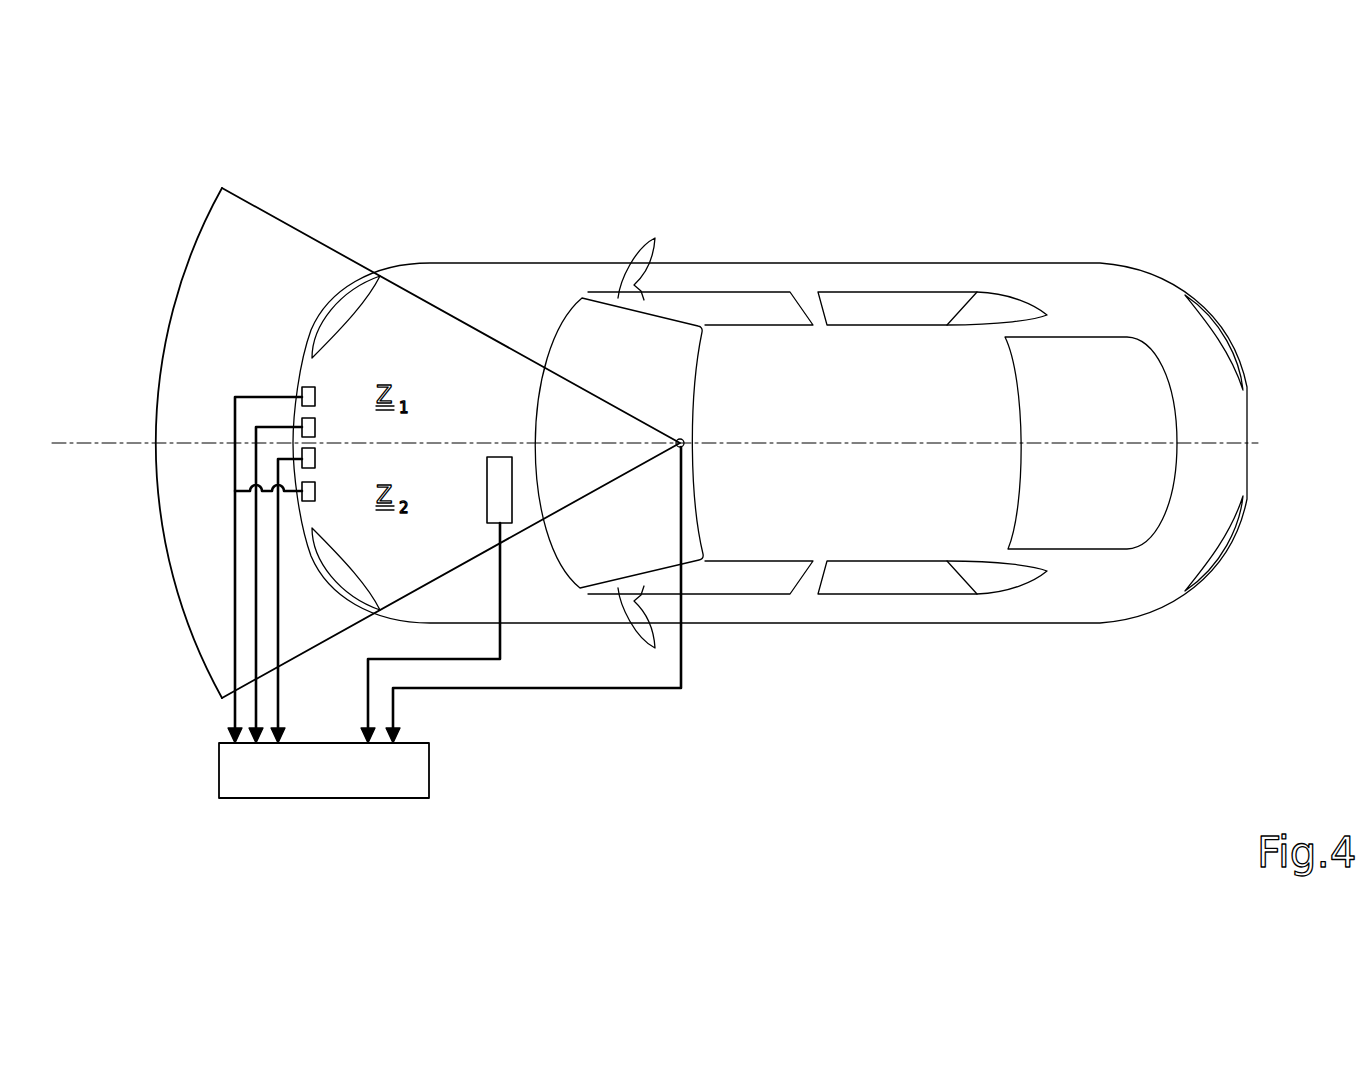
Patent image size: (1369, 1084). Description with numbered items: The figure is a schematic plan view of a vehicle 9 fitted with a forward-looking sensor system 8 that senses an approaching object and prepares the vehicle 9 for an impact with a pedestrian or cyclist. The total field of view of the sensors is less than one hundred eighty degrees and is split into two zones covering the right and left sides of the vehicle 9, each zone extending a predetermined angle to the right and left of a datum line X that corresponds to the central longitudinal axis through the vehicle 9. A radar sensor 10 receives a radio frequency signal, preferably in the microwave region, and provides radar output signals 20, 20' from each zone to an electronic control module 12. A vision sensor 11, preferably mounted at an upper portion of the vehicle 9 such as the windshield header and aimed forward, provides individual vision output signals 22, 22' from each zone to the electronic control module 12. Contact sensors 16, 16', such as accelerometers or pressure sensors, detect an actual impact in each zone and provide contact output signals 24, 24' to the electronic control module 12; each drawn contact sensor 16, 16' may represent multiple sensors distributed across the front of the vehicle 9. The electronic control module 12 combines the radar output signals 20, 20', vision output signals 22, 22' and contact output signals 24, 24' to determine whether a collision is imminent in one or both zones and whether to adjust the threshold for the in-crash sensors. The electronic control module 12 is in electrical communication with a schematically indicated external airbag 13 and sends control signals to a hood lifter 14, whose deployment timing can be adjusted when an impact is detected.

The sensor system 8 is at (1076, 200).
The vehicle 9 is at (1198, 290).
The radar sensor 10 is at (300, 455).
The vision sensor 11 is at (684, 438).
The electronic control module 12 is at (311, 784).
The external airbag 13 is at (300, 420).
The hood lifter 14 is at (503, 452).
The contact sensor 16 is at (208, 357).
The contact sensor 16' is at (208, 510).
The radar output signal 20 is at (288, 570).
The radar output signal 20' is at (288, 570).
The vision output signal 22 is at (527, 604).
The vision output signal 22' is at (527, 604).
The contact output signal 24 is at (375, 443).
The contact output signal 24' is at (375, 443).
The datum line X is at (83, 447).